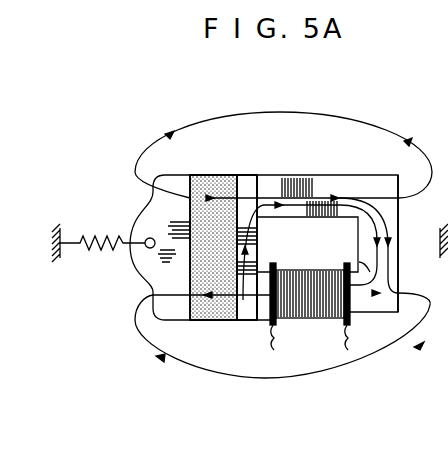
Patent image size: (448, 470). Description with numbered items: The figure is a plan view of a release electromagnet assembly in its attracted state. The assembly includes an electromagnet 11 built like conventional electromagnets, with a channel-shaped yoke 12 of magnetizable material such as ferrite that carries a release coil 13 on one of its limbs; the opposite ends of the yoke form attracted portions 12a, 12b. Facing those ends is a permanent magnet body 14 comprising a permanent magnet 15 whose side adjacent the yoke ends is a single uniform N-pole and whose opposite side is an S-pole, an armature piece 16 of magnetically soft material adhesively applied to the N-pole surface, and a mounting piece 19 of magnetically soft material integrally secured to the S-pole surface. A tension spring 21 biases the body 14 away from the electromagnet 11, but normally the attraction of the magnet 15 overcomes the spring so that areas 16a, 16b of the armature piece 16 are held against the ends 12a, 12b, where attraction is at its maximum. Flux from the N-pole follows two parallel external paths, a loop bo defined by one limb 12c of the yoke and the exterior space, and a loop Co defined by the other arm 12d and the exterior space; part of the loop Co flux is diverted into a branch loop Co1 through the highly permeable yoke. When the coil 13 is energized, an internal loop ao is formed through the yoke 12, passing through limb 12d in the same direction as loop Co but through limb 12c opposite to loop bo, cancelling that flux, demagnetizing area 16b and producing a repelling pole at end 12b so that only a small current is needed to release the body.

The electromagnet 11 is at (335, 172).
The yoke 12 is at (398, 239).
The attracted portion 12a is at (270, 190).
The attracted portion 12b is at (264, 322).
The limb 12c is at (360, 300).
The limb 12d is at (322, 218).
The release coil 13 is at (305, 312).
The permanent magnet body 14 is at (217, 170).
The permanent magnet 15 is at (200, 180).
The armature piece 16 is at (258, 240).
The area of armature piece 16a is at (250, 180).
The area of armature piece 16b is at (244, 312).
The mounting piece 19 is at (162, 281).
The tension spring 21 is at (88, 240).
The loop c0 Co is at (314, 114).
The branch loop c01 Co1 is at (388, 216).
The loop a0 ao is at (370, 272).
The loop b0 bo is at (345, 376).